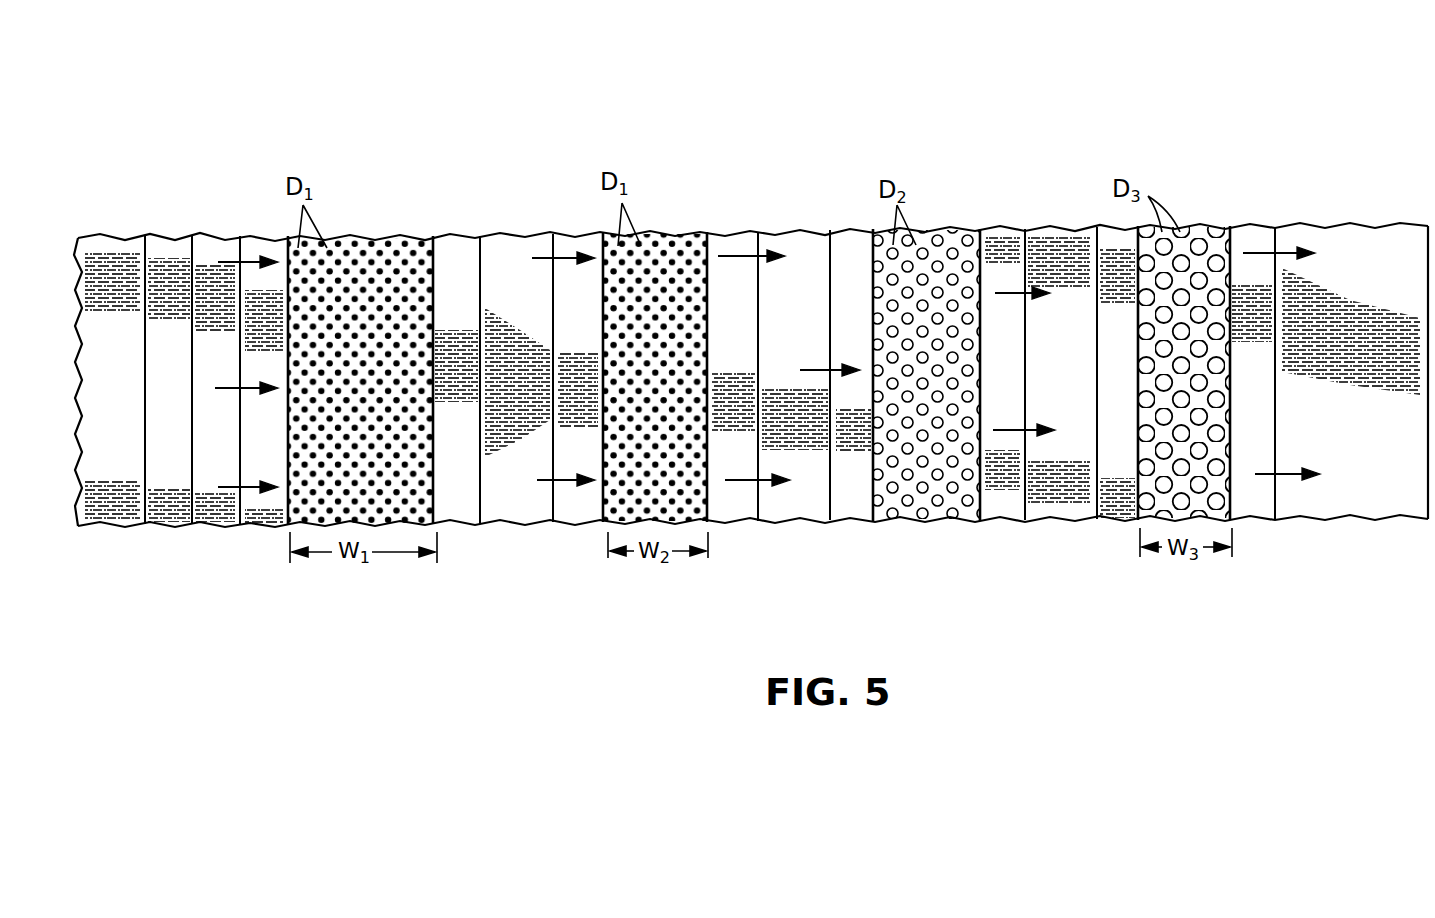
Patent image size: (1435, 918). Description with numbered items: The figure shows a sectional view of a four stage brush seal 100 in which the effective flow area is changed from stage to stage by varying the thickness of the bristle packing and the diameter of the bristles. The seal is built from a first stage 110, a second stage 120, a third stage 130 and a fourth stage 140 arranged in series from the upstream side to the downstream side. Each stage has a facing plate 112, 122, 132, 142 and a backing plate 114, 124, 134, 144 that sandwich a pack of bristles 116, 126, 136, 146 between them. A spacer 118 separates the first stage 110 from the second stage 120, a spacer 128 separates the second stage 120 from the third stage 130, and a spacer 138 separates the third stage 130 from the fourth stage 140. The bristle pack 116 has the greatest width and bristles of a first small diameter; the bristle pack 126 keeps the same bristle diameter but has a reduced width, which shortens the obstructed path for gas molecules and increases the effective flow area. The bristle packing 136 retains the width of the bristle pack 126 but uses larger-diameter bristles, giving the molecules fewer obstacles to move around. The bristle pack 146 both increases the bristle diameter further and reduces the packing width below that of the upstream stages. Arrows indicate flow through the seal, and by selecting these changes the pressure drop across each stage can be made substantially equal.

The seal 100 is at (751, 276).
The first stage 110 is at (365, 444).
The facing plate 112 is at (265, 525).
The backing plate 114 is at (455, 520).
The bristles 116 is at (350, 243).
The spacer 118 is at (505, 250).
The second stage 120 is at (671, 444).
The facing plate 122 is at (585, 515).
The backing plate 124 is at (732, 515).
The bristles 126 is at (665, 240).
The spacer 128 is at (797, 240).
The third stage 130 is at (945, 440).
The facing plate 132 is at (855, 515).
The backing plate 134 is at (1003, 515).
The bristles 136 is at (950, 240).
The spacer 138 is at (1063, 232).
The fourth stage 140 is at (1209, 432).
The facing plate 142 is at (1125, 520).
The backing plate 144 is at (1262, 520).
The bristles 146 is at (1205, 238).